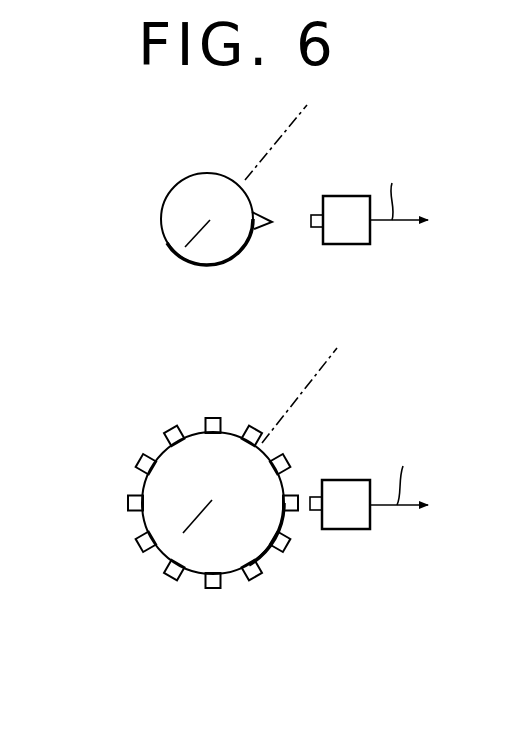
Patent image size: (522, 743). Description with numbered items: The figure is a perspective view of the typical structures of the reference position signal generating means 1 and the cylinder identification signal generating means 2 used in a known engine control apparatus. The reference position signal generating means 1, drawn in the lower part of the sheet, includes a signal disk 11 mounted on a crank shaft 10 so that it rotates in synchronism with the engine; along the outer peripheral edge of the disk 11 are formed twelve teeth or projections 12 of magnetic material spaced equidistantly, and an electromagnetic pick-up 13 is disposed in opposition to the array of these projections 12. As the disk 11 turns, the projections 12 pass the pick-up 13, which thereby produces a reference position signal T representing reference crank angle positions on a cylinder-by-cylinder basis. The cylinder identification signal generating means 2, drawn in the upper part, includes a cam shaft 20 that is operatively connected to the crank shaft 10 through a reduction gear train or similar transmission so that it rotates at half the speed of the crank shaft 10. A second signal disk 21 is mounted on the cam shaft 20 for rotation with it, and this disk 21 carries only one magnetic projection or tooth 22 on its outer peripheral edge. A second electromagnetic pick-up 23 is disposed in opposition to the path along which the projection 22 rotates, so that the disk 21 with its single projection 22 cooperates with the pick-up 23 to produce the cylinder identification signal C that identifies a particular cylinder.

The reference position signal generating means 1 is at (187, 486).
The crank shaft 10 is at (267, 437).
The signal disk 11 is at (262, 540).
The teeth or projections 12 is at (288, 543).
The electromagnetic pick-up 13 is at (370, 529).
The cylinder identification signal generating means 2 is at (175, 205).
The cam shaft 20 is at (245, 180).
The second signal disk 21 is at (173, 197).
The magnetic projection or tooth 22 is at (258, 229).
The second electromagnetic pick-up 23 is at (347, 244).